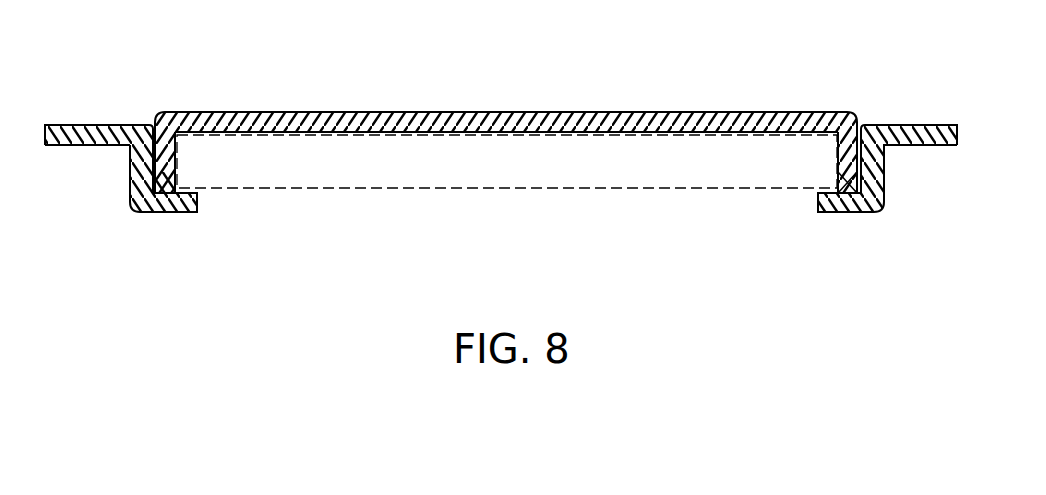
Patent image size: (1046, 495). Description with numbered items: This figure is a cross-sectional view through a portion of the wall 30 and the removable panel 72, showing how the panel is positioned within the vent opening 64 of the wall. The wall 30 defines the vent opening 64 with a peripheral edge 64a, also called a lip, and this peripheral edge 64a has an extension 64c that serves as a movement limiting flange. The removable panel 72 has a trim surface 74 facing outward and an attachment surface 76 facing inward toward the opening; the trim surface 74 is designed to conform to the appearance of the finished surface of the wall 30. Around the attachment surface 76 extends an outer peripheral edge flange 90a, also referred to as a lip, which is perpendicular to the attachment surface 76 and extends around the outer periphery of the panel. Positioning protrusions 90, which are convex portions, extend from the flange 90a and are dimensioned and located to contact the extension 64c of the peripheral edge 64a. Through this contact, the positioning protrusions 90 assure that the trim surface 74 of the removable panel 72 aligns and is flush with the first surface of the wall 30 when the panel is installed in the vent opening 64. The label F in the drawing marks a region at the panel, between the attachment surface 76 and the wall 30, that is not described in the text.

The wall 30 is at (91, 126).
The vent opening 64 is at (503, 170).
The peripheral edge 64a is at (137, 175).
The extension 64c is at (170, 207).
The removable panel 72 is at (506, 119).
The trim surface 74 is at (807, 112).
The attachment surface 76 is at (732, 130).
The positioning protrusions 90 is at (173, 178).
The outer peripheral edge flange 90a is at (168, 160).
The fluid F is at (597, 190).